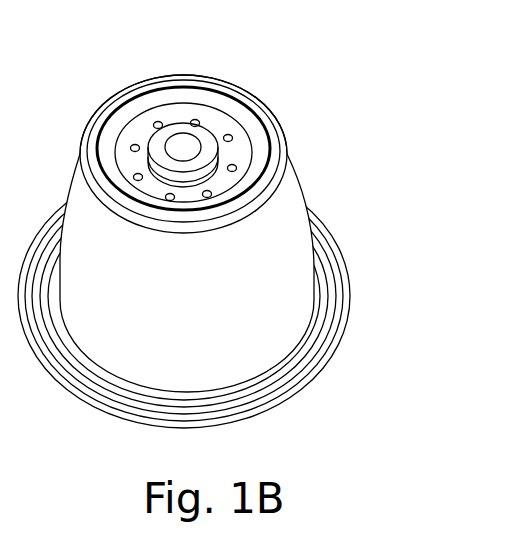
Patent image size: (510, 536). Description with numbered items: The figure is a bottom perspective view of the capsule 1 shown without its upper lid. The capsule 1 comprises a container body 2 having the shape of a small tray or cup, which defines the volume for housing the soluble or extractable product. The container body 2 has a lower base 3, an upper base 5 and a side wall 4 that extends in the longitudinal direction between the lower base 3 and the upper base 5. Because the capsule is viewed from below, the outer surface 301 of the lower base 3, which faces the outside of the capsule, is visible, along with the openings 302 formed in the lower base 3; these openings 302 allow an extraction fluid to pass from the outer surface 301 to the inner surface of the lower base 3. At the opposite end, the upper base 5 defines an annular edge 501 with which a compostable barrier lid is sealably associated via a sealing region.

The capsule 1 is at (241, 240).
The container body 2 is at (300, 186).
The lower base 3 is at (227, 100).
The outer surface 301 is at (140, 102).
The openings 302 is at (232, 136).
The side wall 4 is at (250, 348).
The upper base 5 is at (349, 284).
The annular edge 501 is at (353, 313).